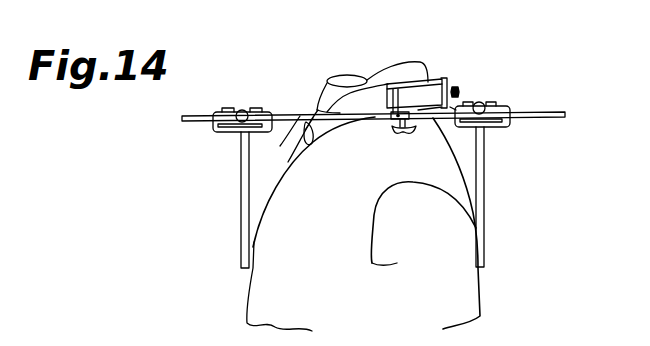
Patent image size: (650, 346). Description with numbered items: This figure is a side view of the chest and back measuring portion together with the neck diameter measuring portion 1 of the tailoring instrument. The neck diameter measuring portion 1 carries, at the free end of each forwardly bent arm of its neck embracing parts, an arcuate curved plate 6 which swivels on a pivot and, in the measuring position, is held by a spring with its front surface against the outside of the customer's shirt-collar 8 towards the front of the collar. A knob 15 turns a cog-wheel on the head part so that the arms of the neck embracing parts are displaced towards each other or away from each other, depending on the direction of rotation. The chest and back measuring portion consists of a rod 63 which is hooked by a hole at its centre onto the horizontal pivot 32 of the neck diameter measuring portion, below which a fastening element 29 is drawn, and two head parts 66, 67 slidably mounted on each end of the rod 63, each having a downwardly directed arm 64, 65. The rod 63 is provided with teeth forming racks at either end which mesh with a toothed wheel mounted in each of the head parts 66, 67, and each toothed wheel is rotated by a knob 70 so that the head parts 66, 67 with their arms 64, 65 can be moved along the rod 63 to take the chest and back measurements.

The neck diameter measuring portion 1 is at (455, 70).
The arcuate curved plate 6 is at (366, 103).
The shirt-collar 8 is at (337, 112).
The knob 15 is at (459, 92).
The wing nut 29 is at (401, 133).
The horizontal pivot 32 is at (392, 120).
The rod 63 is at (560, 118).
The downwardly directed arm 64 is at (242, 203).
The downwardly directed arm 65 is at (486, 210).
The head part 66 is at (225, 117).
The head part 67 is at (505, 107).
The knob 70 is at (242, 110).